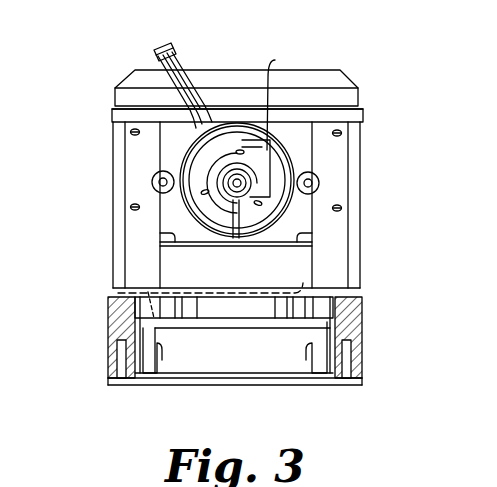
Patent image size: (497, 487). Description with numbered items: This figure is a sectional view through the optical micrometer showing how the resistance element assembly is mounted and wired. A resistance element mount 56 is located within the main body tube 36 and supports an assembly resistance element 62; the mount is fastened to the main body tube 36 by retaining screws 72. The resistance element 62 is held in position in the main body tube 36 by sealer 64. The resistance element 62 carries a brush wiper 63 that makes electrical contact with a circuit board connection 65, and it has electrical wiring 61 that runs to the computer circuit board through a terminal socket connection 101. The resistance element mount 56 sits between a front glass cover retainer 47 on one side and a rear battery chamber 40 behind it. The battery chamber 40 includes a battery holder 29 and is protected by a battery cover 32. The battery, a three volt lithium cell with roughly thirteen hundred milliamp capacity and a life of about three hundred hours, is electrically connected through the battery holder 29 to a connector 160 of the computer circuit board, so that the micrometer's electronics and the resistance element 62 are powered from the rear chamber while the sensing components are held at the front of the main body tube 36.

The terminal socket connection 101 is at (156, 50).
The electrical wiring 61 is at (184, 74).
The brush wiper 63 is at (287, 97).
The front glass cover retainer 47 is at (343, 73).
The resistance element 62 is at (288, 152).
The retaining screws 72 is at (153, 193).
The main body tube 36 is at (360, 257).
The sealer 64 is at (160, 127).
The resistance element mount 56 is at (153, 170).
The connector 160 is at (148, 292).
The circuit board connection 65 is at (240, 237).
The battery holder 29 is at (160, 363).
The battery cover 32 is at (228, 388).
The rear battery chamber 40 is at (272, 322).